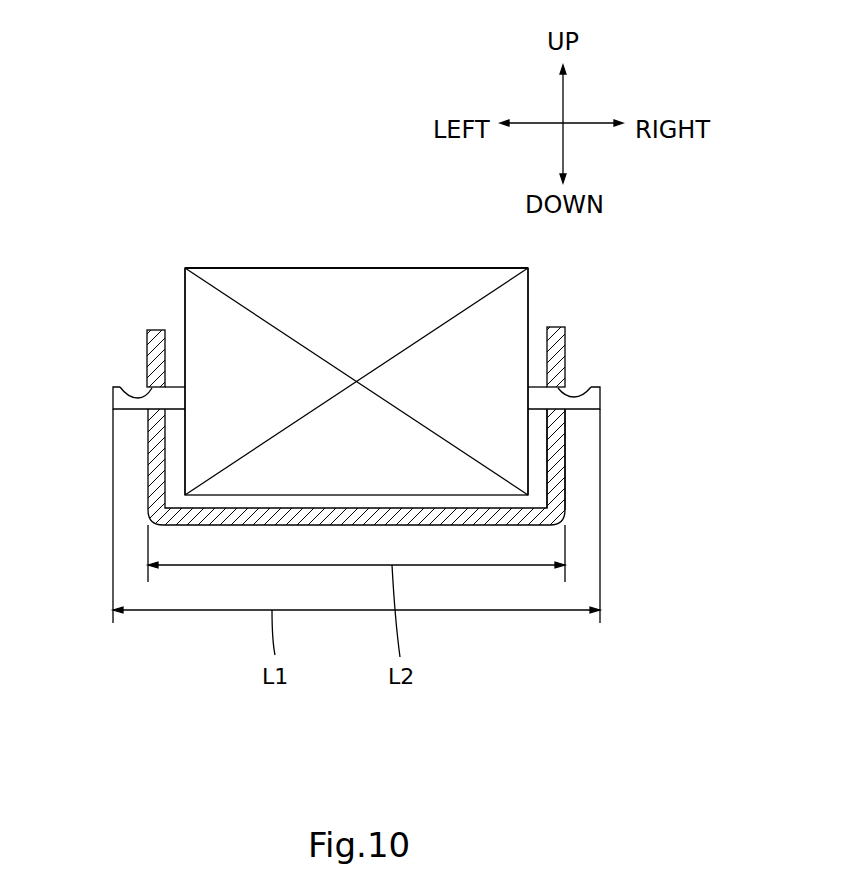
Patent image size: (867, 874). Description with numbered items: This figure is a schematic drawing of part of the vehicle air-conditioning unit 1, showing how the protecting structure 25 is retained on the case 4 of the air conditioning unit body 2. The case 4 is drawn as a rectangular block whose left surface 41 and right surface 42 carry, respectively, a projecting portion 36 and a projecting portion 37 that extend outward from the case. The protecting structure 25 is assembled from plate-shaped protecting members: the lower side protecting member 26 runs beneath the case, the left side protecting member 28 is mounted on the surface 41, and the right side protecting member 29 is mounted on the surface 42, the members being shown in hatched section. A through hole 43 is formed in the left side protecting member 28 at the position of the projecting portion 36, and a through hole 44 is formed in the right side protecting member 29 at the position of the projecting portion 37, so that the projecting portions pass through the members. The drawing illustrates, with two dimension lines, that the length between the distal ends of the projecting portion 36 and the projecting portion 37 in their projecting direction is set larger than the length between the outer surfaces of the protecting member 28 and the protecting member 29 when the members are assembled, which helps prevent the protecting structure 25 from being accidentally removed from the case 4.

The vehicle air-conditioning unit 1 is at (536, 277).
The air conditioning unit body 2 is at (290, 263).
The case 4 is at (237, 267).
The surface 41 is at (185, 293).
The surface 42 is at (530, 300).
The protecting structure 25 is at (572, 344).
The lower side protecting member 26 is at (388, 522).
The left side protecting member 28 is at (147, 352).
The right side protecting member 29 is at (565, 460).
The projecting portion 36 is at (113, 400).
The projecting portion 37 is at (600, 398).
The through hole 43 is at (125, 393).
The through hole 44 is at (588, 386).